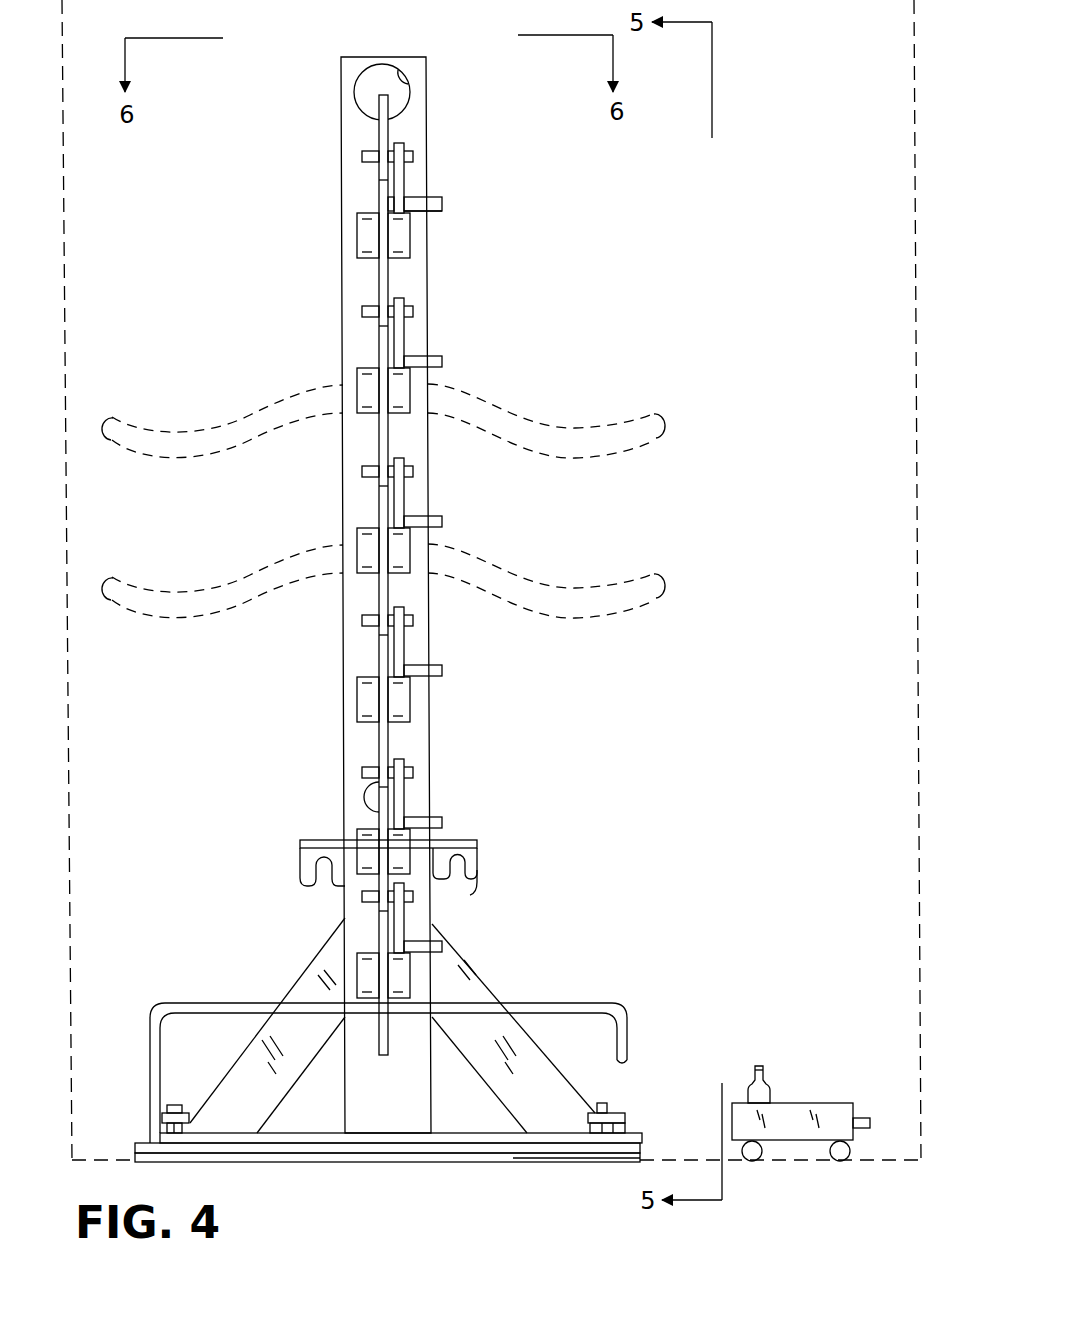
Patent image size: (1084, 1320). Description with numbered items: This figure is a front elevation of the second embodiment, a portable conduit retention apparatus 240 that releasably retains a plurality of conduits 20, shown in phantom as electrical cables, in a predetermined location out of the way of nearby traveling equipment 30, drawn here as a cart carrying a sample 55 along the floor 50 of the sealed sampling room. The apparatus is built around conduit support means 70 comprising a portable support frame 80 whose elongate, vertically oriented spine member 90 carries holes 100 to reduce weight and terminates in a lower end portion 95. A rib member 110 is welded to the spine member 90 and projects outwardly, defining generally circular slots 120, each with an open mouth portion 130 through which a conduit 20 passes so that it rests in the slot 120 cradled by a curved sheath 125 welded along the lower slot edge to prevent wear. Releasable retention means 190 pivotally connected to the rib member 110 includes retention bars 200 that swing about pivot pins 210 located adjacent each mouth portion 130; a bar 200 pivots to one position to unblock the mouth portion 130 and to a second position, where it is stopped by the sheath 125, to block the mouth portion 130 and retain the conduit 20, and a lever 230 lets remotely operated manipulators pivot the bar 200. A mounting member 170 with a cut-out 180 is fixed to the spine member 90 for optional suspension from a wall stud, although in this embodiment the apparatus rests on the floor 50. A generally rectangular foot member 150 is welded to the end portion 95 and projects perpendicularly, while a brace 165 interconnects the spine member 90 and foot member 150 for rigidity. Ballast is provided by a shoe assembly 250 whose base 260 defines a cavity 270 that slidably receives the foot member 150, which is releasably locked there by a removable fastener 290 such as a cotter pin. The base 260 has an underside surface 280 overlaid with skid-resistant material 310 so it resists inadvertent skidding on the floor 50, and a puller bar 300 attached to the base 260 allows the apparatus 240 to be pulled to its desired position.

The conduits 20 is at (535, 420).
The traveling equipment 30 is at (805, 1103).
The floor 50 is at (83, 1162).
The sample 55 is at (765, 1068).
The conduit support means 70 is at (375, 552).
The support frame 80 is at (358, 593).
The spine member 90 is at (340, 100).
The end portion 95 is at (420, 1088).
The holes 100 is at (405, 88).
The rib member 110 is at (362, 158).
The slots 120 is at (379, 183).
The sheath 125 is at (368, 248).
The open mouth portion 130 is at (390, 198).
The foot member 150 is at (215, 1137).
The brace 165 is at (463, 973).
The mounting member 170 is at (449, 857).
The cut-out 180 is at (470, 895).
The releasable retention means 190 is at (434, 181).
The retention bar 200 is at (442, 200).
The pivot pin 210 is at (412, 153).
The lever 230 is at (428, 211).
The portable conduit retention apparatus 240 is at (277, 201).
The shoe assembly 250 is at (395, 1055).
The base 260 is at (640, 1148).
The cavity 270 is at (160, 1113).
The underside surface 280 is at (513, 1158).
The removable fastener 290 is at (607, 1107).
The puller bar 300 is at (620, 1000).
The skid-resistant material 310 is at (355, 1162).